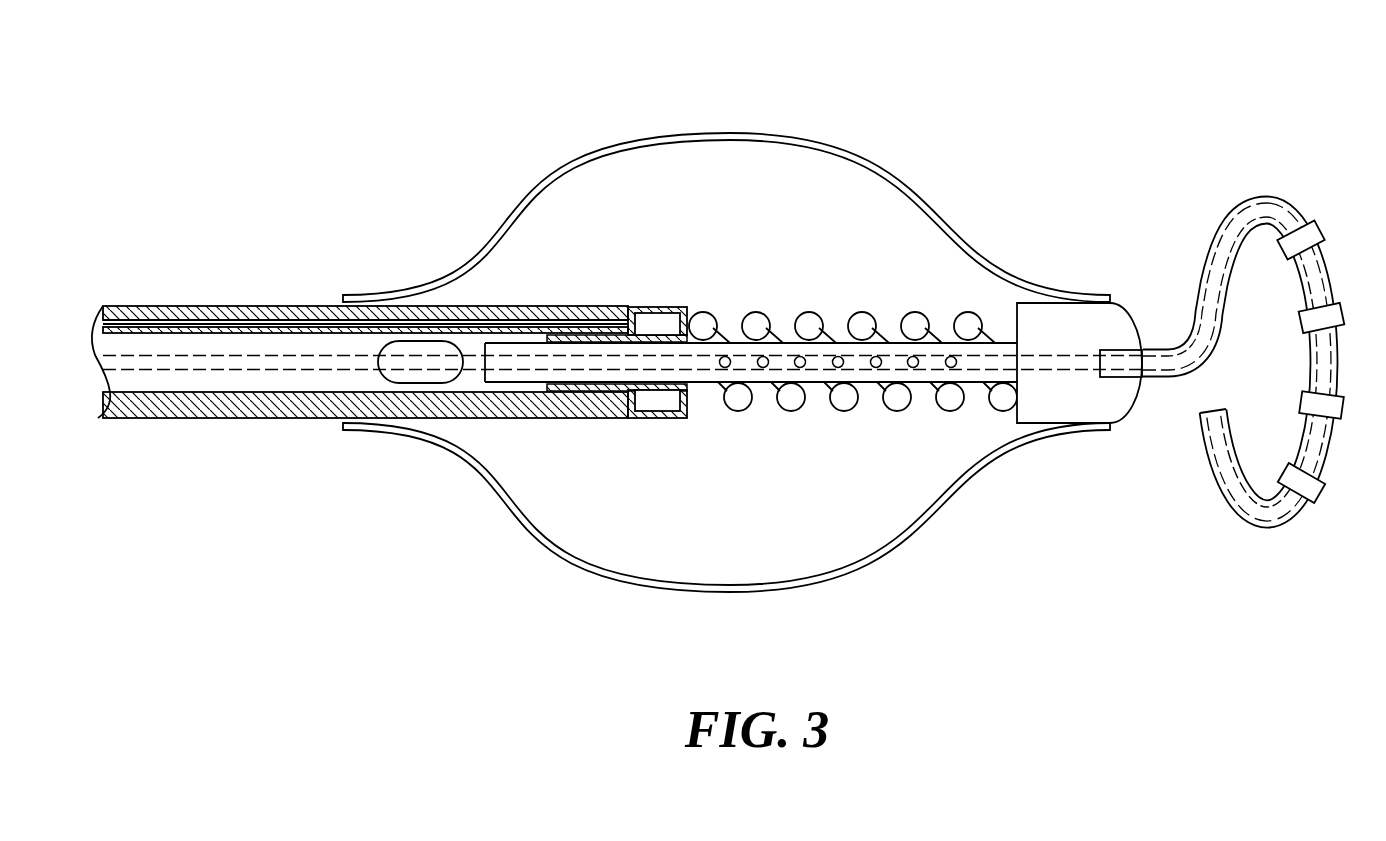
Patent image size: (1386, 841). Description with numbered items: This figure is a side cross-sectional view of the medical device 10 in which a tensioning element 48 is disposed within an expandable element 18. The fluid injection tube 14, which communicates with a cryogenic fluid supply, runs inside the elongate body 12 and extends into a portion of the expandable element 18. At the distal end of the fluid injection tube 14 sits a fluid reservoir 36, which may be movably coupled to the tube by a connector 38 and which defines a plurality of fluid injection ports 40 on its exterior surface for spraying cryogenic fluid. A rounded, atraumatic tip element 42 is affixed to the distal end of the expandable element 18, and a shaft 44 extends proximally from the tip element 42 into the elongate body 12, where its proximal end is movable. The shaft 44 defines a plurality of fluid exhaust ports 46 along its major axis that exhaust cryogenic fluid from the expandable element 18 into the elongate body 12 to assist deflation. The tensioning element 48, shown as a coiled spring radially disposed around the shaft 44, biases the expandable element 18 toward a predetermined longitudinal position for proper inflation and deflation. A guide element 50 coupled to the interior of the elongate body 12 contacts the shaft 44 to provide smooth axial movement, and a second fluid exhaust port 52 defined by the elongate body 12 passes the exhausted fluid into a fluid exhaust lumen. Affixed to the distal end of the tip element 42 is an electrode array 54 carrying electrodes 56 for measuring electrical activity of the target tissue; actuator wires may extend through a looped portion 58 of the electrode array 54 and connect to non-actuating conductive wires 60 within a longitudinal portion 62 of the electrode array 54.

The medical device 10 is at (357, 152).
The elongate body 12 is at (541, 417).
The fluid injection tube 14 is at (524, 323).
The expandable element 18 is at (508, 217).
The fluid reservoir 36 is at (683, 305).
The connector 38 is at (587, 325).
The fluid injection ports 40 is at (657, 306).
The tip element 42 is at (1060, 320).
The shaft 44 is at (912, 372).
The fluid exhaust ports 46 is at (802, 366).
The tensioning element 48 is at (862, 320).
The guide element 50 is at (601, 392).
The second fluid exhaust port 52 is at (421, 376).
The electrode array 54 is at (1248, 198).
The electrodes 56 is at (1227, 240).
The looped portion 58 is at (1323, 257).
The non-actuating conductive wires 60 is at (1160, 360).
The longitudinal portion 62 is at (1157, 380).